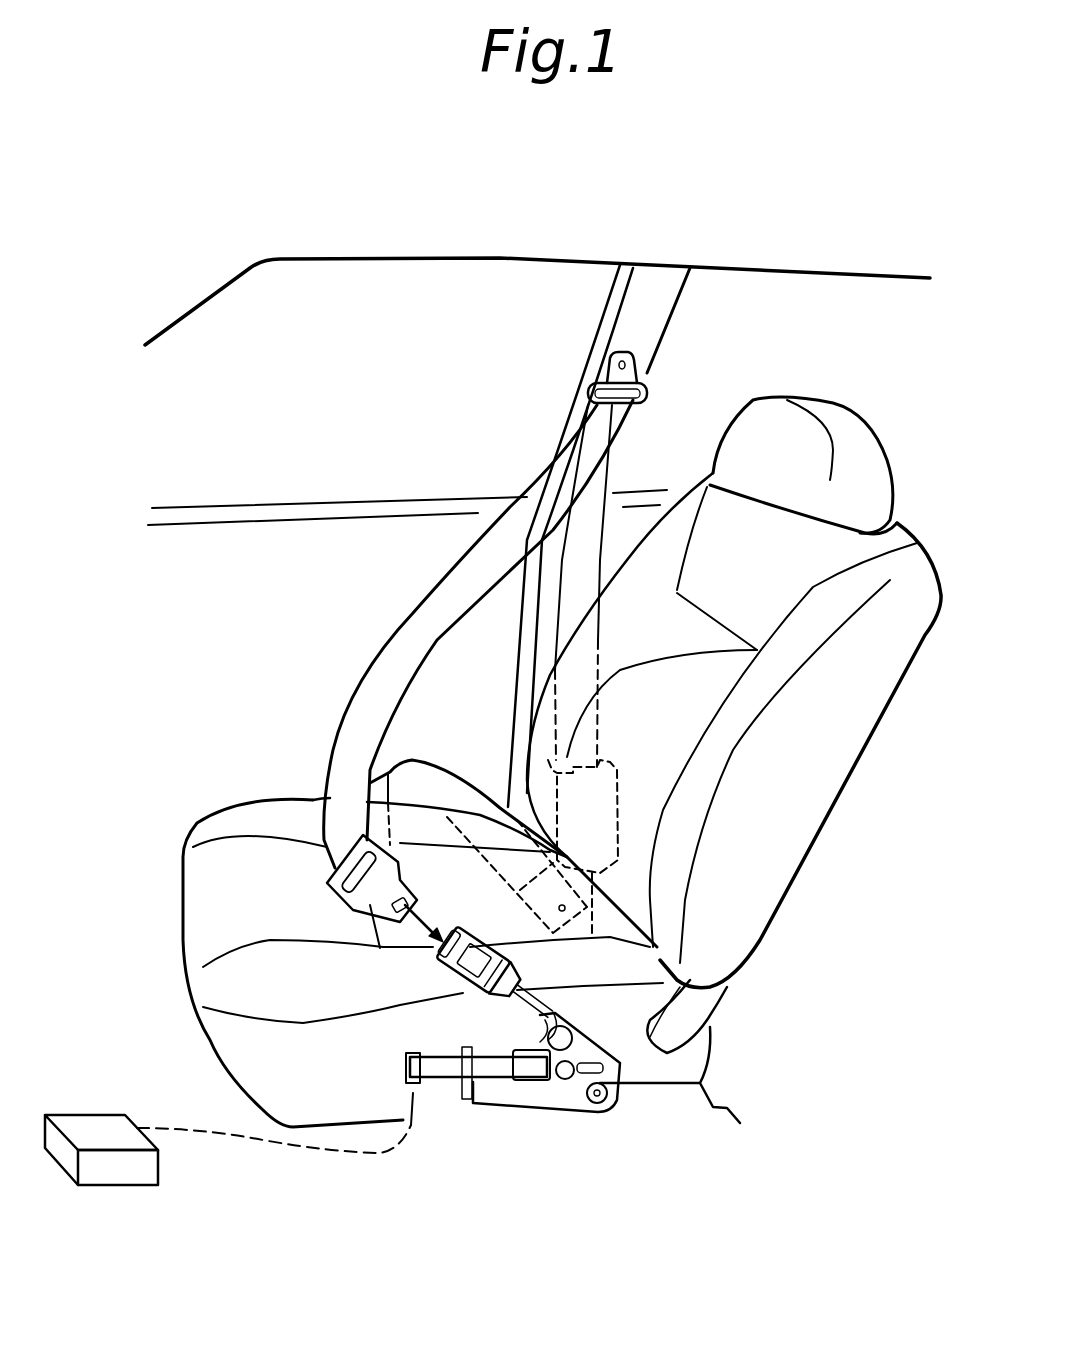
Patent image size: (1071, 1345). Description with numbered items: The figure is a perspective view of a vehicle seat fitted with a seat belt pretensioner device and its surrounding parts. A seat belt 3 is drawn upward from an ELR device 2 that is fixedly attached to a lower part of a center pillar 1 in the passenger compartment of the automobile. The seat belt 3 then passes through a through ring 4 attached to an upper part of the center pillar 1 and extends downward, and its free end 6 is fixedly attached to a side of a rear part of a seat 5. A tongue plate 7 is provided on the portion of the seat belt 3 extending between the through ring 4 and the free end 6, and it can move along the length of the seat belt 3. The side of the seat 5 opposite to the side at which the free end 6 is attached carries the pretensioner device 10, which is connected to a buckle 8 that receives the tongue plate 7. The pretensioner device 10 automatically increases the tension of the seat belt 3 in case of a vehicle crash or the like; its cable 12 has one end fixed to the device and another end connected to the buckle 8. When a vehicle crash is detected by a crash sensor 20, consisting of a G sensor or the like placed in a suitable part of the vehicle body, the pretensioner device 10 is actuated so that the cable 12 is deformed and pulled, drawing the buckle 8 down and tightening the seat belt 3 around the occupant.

The center pillar 1 is at (653, 328).
The ELR device 2 is at (617, 793).
The seat belt 3 is at (418, 618).
The through ring 4 is at (630, 372).
The seat 5 is at (242, 815).
The free end 6 is at (537, 910).
The tongue plate 7 is at (362, 915).
The buckle 8 is at (470, 993).
The pretensioner device 10 is at (560, 1103).
The cable 12 is at (550, 1017).
The crash sensor 20 is at (125, 1183).